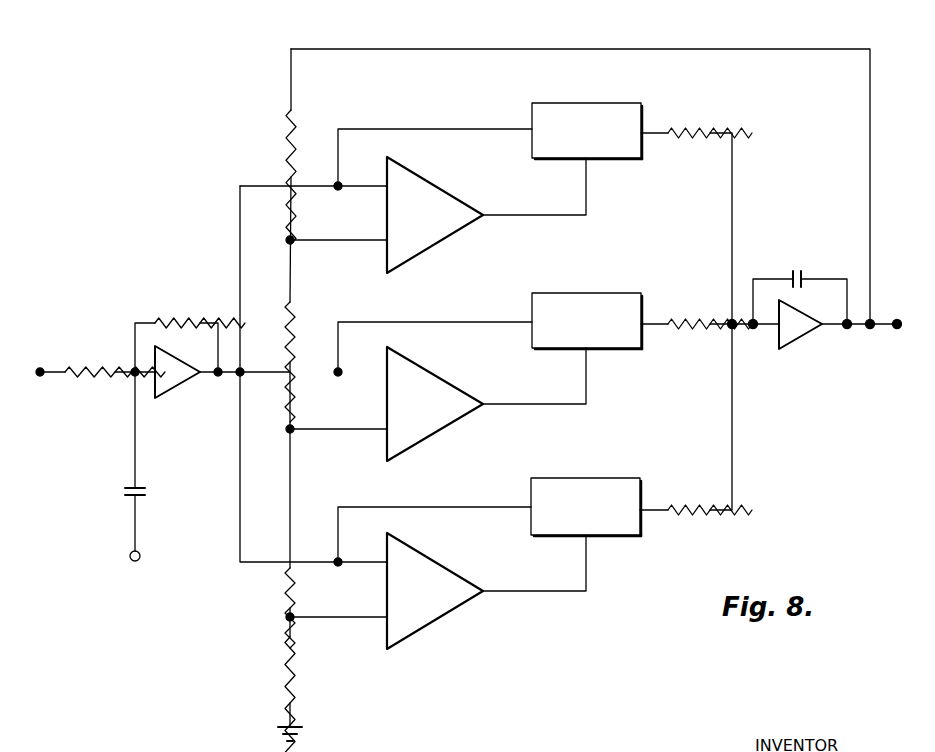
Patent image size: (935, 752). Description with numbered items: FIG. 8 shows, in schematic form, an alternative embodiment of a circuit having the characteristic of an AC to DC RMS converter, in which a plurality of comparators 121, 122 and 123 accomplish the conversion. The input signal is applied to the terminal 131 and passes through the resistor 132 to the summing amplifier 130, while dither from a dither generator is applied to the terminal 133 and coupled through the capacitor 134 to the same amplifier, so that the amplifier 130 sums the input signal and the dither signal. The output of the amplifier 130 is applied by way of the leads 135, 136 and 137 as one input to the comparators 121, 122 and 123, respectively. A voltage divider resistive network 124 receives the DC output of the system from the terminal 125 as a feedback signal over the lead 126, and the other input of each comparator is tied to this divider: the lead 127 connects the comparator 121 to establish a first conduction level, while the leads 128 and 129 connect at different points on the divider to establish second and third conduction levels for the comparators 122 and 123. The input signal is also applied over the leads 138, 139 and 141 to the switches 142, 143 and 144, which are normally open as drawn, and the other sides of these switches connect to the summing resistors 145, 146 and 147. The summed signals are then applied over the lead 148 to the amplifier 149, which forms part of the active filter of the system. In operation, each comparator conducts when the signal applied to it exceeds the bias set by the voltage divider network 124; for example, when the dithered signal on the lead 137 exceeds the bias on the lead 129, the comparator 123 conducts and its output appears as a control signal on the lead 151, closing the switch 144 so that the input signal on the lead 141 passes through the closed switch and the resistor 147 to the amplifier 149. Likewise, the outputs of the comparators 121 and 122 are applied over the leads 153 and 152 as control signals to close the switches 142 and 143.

The comparator 121 is at (442, 243).
The comparator 122 is at (440, 430).
The comparator 123 is at (440, 617).
The voltage divider resistive network 124 is at (252, 150).
The terminal 125 is at (866, 330).
The lead 126 is at (564, 49).
The lead 127 is at (318, 243).
The lead 128 is at (314, 432).
The lead 129 is at (330, 620).
The summing amplifier 130 is at (182, 384).
The terminal 131 is at (44, 369).
The resistor 132 is at (105, 367).
The terminal 133 is at (141, 556).
The capacitor 134 is at (147, 494).
The lead 135 is at (250, 190).
The lead 136 is at (248, 376).
The lead 137 is at (246, 566).
The lead 138 is at (401, 129).
The lead 139 is at (468, 322).
The lead 141 is at (446, 507).
The switch 142 is at (611, 103).
The switch 143 is at (606, 293).
The switch 144 is at (576, 478).
The summing resistor 145 is at (682, 138).
The summing resistor 146 is at (682, 329).
The summing resistor 147 is at (712, 483).
The lead 148 is at (742, 330).
The amplifier 149 is at (803, 336).
The lead 151 is at (562, 593).
The lead 152 is at (566, 406).
The lead 153 is at (540, 215).